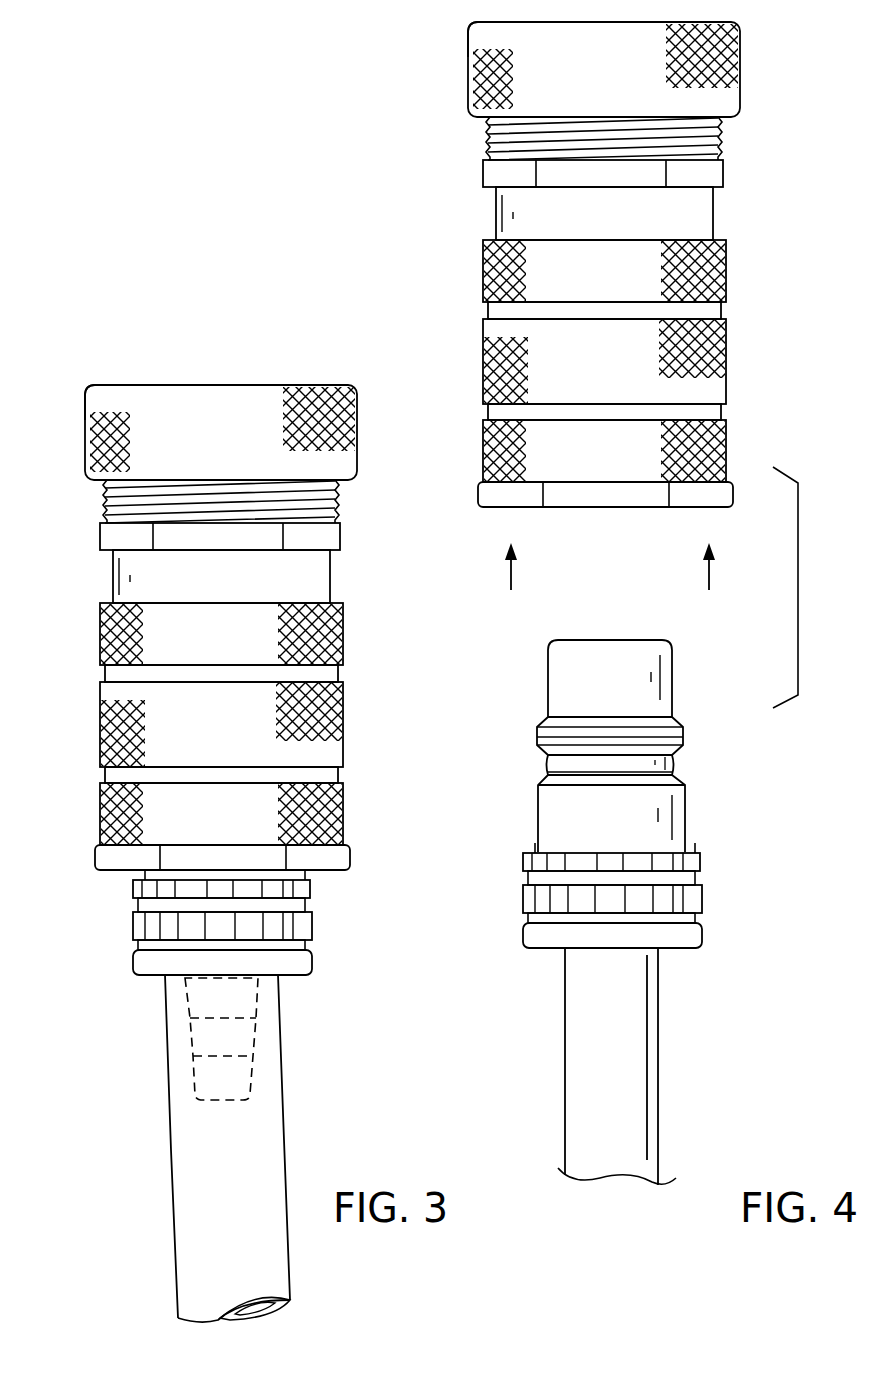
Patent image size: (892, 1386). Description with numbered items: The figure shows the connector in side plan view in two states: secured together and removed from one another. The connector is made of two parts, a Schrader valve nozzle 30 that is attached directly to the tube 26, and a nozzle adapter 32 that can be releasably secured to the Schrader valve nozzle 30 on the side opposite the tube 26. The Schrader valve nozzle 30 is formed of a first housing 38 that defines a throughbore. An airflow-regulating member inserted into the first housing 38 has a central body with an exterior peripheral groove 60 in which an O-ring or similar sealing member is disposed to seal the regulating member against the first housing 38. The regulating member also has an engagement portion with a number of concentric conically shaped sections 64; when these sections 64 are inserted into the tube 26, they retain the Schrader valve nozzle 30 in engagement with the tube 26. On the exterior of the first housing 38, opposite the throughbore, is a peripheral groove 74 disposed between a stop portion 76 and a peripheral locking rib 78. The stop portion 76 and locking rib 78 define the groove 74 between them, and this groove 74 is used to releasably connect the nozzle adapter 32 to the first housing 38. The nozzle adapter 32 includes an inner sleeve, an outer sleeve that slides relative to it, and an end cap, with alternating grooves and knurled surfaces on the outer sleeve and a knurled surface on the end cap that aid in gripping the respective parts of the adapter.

In FIG. 3, the tube 26 is at (280, 1153).
In FIG. 4, the tube 26 is at (640, 1062).
In FIG. 3, the Schrader valve nozzle 30 is at (113, 917).
In FIG. 4, the Schrader valve nozzle 30 is at (638, 790).
In FIG. 3, the nozzle adapter 32 is at (84, 722).
In FIG. 4, the nozzle adapter 32 is at (765, 305).
In FIG. 4, the first housing 38 is at (547, 683).
In FIG. 3, the exterior peripheral groove 60 is at (223, 1039).
In FIG. 3, the concentric conically shaped sections 64 is at (193, 1090).
In FIG. 4, the peripheral groove 74 is at (547, 763).
In FIG. 4, the stop portion 76 is at (545, 778).
In FIG. 4, the peripheral locking rib 78 is at (686, 735).